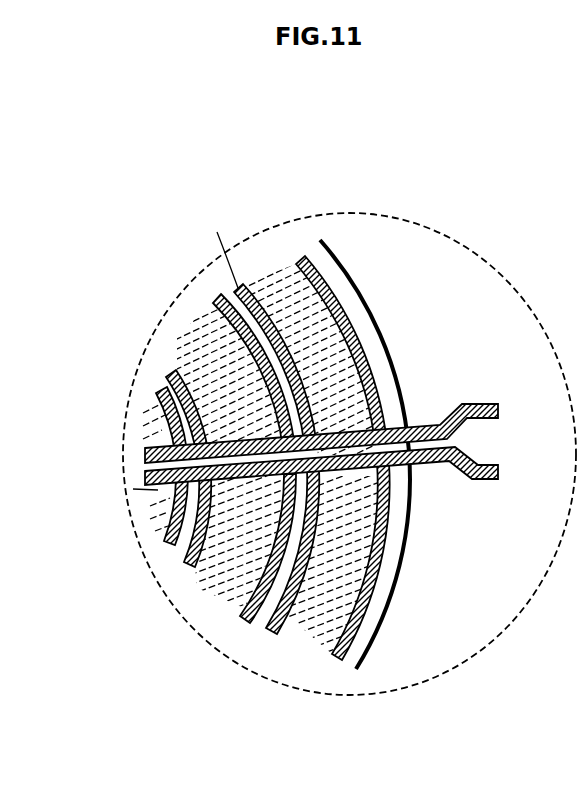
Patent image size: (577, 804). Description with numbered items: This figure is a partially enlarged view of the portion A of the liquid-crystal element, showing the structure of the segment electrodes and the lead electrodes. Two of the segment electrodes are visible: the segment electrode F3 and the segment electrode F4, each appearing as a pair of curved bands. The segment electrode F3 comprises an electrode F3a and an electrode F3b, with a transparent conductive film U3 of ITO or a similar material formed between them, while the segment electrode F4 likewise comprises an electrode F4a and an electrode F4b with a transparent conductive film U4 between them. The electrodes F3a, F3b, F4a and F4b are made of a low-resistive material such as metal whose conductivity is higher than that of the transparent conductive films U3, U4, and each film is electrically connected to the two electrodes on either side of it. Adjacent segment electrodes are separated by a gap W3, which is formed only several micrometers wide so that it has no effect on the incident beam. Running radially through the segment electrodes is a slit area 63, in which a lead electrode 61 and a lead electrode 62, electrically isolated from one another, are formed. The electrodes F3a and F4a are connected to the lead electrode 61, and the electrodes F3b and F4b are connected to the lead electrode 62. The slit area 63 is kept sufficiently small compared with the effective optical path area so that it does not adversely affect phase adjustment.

The portion A is at (466, 241).
The segment electrode F3 is at (150, 218).
The electrode F3a is at (170, 370).
The electrode F3b is at (216, 298).
The segment electrode F4 is at (308, 158).
The electrode F4a is at (217, 232).
The electrode F4b is at (304, 255).
The transparent conductive film U3 is at (188, 332).
The transparent conductive film U4 is at (270, 289).
The gap W3 is at (218, 283).
The lead electrode 61 is at (481, 403).
The lead electrode 62 is at (490, 480).
The slit area 63 is at (135, 488).